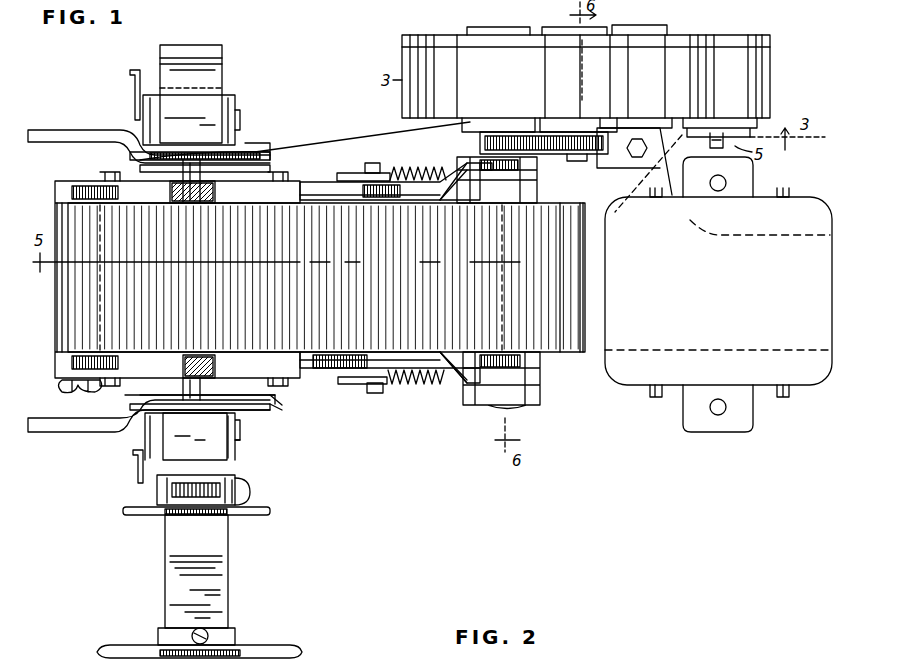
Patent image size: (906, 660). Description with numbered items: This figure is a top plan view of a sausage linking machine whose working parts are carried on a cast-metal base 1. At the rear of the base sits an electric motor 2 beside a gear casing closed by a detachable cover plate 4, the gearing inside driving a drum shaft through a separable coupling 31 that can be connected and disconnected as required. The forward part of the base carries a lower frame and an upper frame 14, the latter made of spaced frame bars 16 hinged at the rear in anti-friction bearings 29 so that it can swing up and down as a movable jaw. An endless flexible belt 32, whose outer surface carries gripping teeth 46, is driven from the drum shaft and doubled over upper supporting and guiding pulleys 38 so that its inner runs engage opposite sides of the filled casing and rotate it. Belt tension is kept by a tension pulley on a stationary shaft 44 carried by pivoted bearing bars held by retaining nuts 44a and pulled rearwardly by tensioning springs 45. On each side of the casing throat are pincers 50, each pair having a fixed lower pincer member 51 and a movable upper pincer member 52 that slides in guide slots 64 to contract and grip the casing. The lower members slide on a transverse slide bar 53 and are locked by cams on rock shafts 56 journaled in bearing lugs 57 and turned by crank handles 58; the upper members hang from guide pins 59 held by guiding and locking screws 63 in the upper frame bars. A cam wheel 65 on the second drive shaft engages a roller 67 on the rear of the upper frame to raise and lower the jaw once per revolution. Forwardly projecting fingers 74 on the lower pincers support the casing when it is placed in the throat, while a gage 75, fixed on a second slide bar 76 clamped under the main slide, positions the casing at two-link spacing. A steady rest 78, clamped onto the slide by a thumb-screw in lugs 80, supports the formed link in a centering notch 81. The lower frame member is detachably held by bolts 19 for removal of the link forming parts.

The base 1 is at (355, 139).
The electric motor 2 is at (723, 321).
The detachable cover plate 4 is at (445, 38).
The upper frame 14 is at (62, 133).
The upper frame bar 16 is at (320, 194).
The bolts 19 is at (68, 395).
The anti-friction bearings 29 is at (535, 178).
The separable coupling 31 is at (505, 130).
The endless flexible belt 32 is at (548, 283).
The upper supporting and guiding pulleys 38 is at (276, 384).
The stationary shaft 44 is at (355, 395).
The retaining nuts 44a is at (390, 165).
The tensioning springs 45 is at (408, 170).
The gripping teeth 46 is at (405, 208).
The pincers 50 is at (106, 157).
The lower pincer member 51 is at (272, 148).
The upper pincer member 52 is at (225, 172).
The slide bar 53 is at (225, 70).
The rock shaft 56 is at (262, 445).
The bearing lugs 57 is at (150, 395).
The crank handle 58 is at (130, 92).
The guide pins 59 is at (183, 170).
The guiding and locking screws 63 is at (205, 190).
The guide slots 64 is at (248, 140).
The cam wheel 65 is at (595, 130).
The roller 67 is at (480, 150).
The fingers 74 is at (62, 432).
The gage 75 is at (270, 648).
The slide bar 76 is at (218, 583).
The steady rest 78 is at (272, 512).
The lugs 80 is at (165, 500).
The centering notch 81 is at (200, 515).